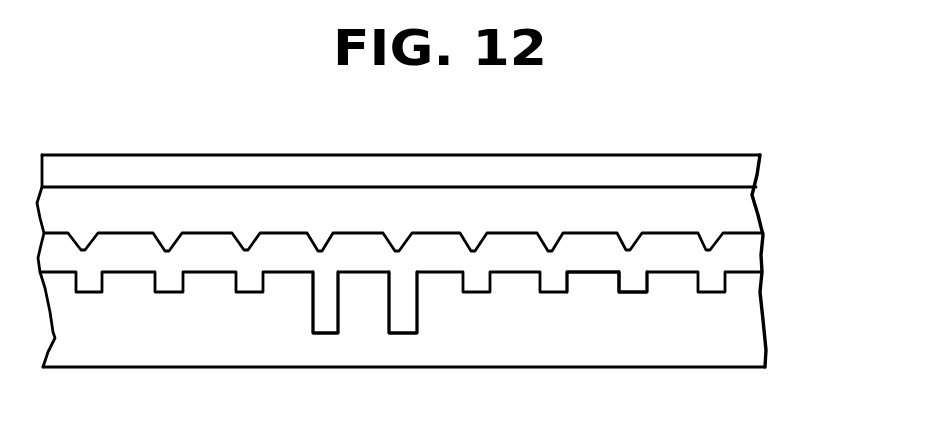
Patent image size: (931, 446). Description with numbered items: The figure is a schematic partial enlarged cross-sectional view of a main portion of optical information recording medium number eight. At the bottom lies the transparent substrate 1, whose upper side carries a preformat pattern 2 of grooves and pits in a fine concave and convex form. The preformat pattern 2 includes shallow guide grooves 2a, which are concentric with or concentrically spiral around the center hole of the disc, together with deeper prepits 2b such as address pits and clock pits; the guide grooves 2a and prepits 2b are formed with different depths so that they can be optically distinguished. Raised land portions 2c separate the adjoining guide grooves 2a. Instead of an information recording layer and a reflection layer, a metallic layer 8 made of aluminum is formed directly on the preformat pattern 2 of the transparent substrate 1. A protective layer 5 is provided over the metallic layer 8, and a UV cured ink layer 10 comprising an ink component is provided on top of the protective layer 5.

The transparent substrate 1 is at (708, 345).
The preformat pattern 2 is at (713, 292).
The guide groove 2a is at (633, 292).
The prepits 2b is at (405, 333).
The land portions 2c is at (597, 268).
The protective layer 5 is at (733, 217).
The metallic layer 8 is at (748, 257).
The UV cured ink layer 10 is at (738, 173).